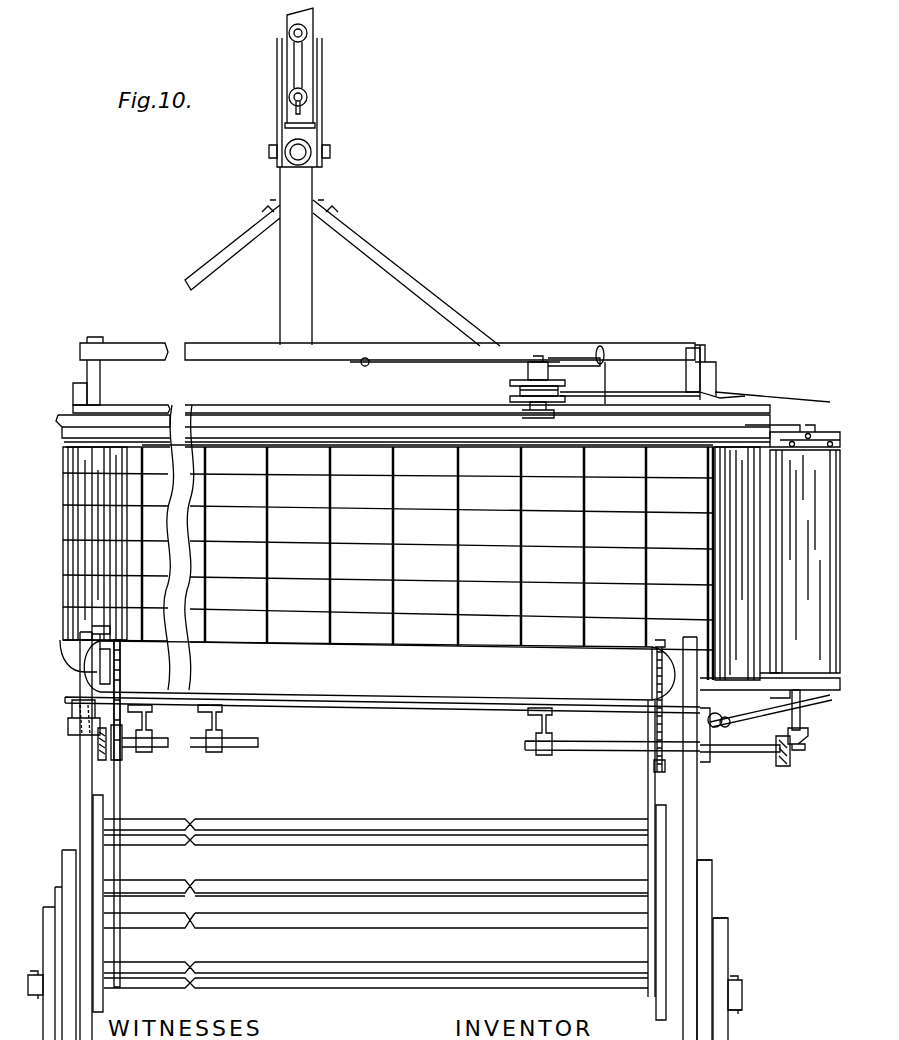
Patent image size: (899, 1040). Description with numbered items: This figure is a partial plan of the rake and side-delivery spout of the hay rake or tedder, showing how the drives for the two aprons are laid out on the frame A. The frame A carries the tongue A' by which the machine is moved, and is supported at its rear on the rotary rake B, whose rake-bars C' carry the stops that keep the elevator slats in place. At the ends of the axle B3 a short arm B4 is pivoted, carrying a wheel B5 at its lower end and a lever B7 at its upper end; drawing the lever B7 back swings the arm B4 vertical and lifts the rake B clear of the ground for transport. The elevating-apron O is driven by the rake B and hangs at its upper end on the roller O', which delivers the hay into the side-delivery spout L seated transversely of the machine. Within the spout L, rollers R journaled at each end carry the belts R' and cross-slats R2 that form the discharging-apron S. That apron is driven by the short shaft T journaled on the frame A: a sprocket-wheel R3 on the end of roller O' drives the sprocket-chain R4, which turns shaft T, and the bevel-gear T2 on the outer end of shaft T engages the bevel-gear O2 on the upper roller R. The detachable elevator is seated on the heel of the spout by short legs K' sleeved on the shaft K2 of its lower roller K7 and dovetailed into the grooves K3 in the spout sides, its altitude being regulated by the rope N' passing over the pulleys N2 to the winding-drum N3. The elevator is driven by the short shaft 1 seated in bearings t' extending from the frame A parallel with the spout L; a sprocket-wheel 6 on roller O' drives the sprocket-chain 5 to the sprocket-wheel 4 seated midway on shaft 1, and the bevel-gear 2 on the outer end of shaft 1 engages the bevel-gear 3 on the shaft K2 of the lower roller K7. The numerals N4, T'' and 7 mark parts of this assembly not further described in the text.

The frame A is at (399, 524).
The tongue A' is at (307, 94).
The winding-drum N3 is at (517, 387).
The pulley flange N4 is at (566, 384).
The pulleys N2 is at (705, 392).
The rope N' is at (695, 388).
The short legs K' is at (792, 427).
The grooves K3 is at (752, 432).
The shaft K2 is at (805, 430).
The lower roller K7 is at (770, 574).
The belts R' is at (550, 563).
The rollers R is at (81, 573).
The sprocket-wheel R3 is at (107, 631).
The sprocket-chain R4 is at (122, 672).
The cross-slats R2 is at (395, 548).
The discharging-apron S is at (238, 502).
The side-delivery spout L is at (427, 504).
The upper roller O' is at (379, 670).
The elevating-apron O is at (367, 814).
The bevel-gear O2 is at (72, 730).
The bevel-gear T2 is at (94, 744).
The collar T'' is at (125, 750).
The short shaft T is at (411, 757).
The hanger 7 is at (148, 722).
The bearings t' is at (619, 734).
The short shaft 1 is at (575, 748).
The bevel-gear 3 is at (805, 740).
The bevel-gear 2 is at (786, 762).
The sprocket-chain 5 is at (663, 639).
The sprocket-wheel 6 is at (658, 670).
The sprocket-wheel 4 is at (662, 772).
The rotary rake B is at (376, 849).
The axle B3 is at (376, 904).
The rake-bars C' is at (376, 966).
The lever B7 is at (703, 950).
The short arm B4 is at (715, 975).
The wheel B5 is at (724, 1024).